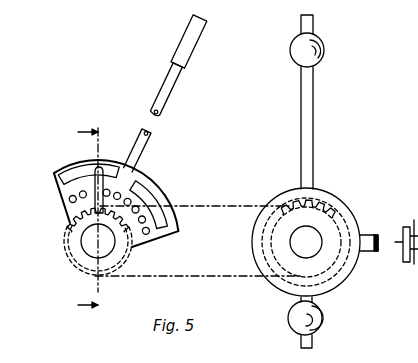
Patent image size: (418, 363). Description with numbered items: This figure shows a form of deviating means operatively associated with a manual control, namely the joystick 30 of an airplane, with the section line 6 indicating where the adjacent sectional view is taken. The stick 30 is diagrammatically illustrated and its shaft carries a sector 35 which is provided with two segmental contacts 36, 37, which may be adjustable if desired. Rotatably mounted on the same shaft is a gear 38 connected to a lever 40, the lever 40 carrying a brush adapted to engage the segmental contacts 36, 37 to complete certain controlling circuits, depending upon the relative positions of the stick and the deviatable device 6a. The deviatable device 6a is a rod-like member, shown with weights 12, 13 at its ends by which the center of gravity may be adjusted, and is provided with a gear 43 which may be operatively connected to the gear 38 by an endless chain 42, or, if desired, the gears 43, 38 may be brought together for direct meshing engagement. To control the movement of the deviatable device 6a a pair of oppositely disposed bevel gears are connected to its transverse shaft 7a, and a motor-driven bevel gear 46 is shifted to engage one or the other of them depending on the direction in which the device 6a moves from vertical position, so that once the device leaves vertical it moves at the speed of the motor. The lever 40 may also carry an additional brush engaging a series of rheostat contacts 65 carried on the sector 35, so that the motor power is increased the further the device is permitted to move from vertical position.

The rod-shaped member 6 is at (88, 222).
The deviatable device 6a is at (305, 95).
The shaft 7a is at (307, 250).
The weight 12 is at (322, 52).
The weight 13 is at (322, 322).
The joystick 30 is at (167, 98).
The sector 35 is at (150, 183).
The segmental contact 36 is at (64, 178).
The segmental contact 37 is at (152, 207).
The gear 38 is at (78, 238).
The lever 40 is at (96, 172).
The endless chain 42 is at (240, 205).
The gear 43 is at (330, 212).
The bevel gear 46 is at (364, 255).
The rheostat contacts 65 is at (70, 200).